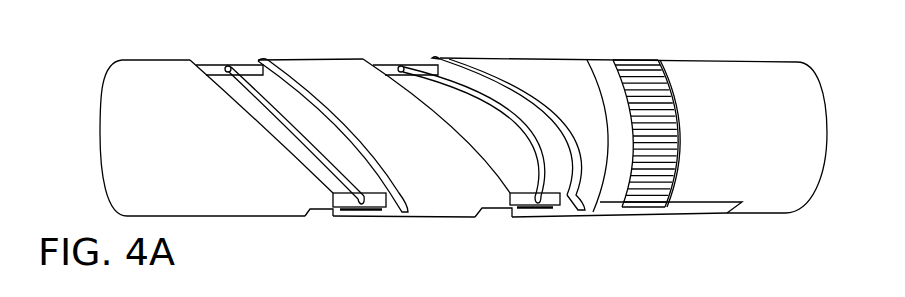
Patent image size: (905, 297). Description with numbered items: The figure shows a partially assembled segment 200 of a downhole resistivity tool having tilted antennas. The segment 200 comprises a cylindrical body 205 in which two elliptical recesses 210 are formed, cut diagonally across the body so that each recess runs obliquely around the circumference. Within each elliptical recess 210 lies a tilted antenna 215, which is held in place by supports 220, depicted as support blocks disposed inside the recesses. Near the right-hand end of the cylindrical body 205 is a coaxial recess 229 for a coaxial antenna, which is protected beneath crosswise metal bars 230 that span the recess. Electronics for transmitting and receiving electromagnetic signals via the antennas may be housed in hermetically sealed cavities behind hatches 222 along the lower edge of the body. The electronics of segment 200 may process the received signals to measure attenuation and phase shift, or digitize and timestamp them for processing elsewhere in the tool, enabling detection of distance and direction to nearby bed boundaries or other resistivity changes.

The segment 200 is at (681, 247).
The cylindrical body 205 is at (148, 66).
The elliptical recess 210 is at (288, 95).
The tilted antenna 215 is at (270, 103).
The support block 220 is at (237, 64).
The hatch 222 is at (323, 217).
The coaxial recess 229 is at (667, 76).
The crosswise metal bar 230 is at (670, 100).